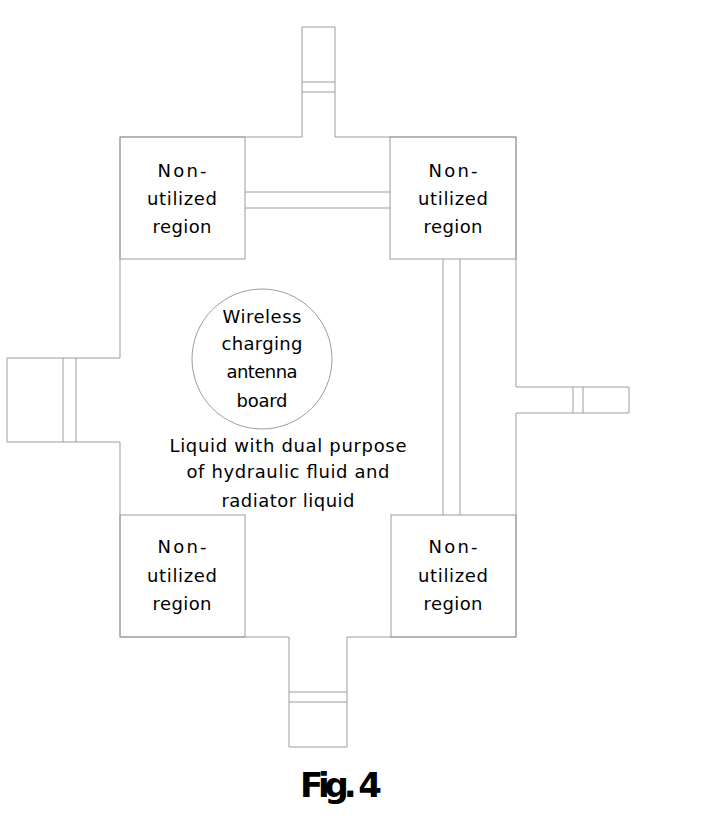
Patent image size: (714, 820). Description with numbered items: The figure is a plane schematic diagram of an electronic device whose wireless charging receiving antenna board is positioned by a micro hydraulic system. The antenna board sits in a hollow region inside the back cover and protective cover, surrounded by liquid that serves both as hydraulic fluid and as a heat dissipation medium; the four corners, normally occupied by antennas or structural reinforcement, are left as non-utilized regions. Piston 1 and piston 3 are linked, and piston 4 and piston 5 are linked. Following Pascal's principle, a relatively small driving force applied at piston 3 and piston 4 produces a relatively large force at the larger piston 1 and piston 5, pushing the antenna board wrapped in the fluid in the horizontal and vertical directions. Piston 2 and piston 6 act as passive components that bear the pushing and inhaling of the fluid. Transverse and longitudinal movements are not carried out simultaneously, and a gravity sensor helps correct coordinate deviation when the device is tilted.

The piston 1 is at (459, 375).
The piston 2 is at (65, 358).
The piston 3 is at (617, 358).
The piston 4 is at (329, 82).
The piston 5 is at (347, 192).
The piston 6 is at (335, 692).